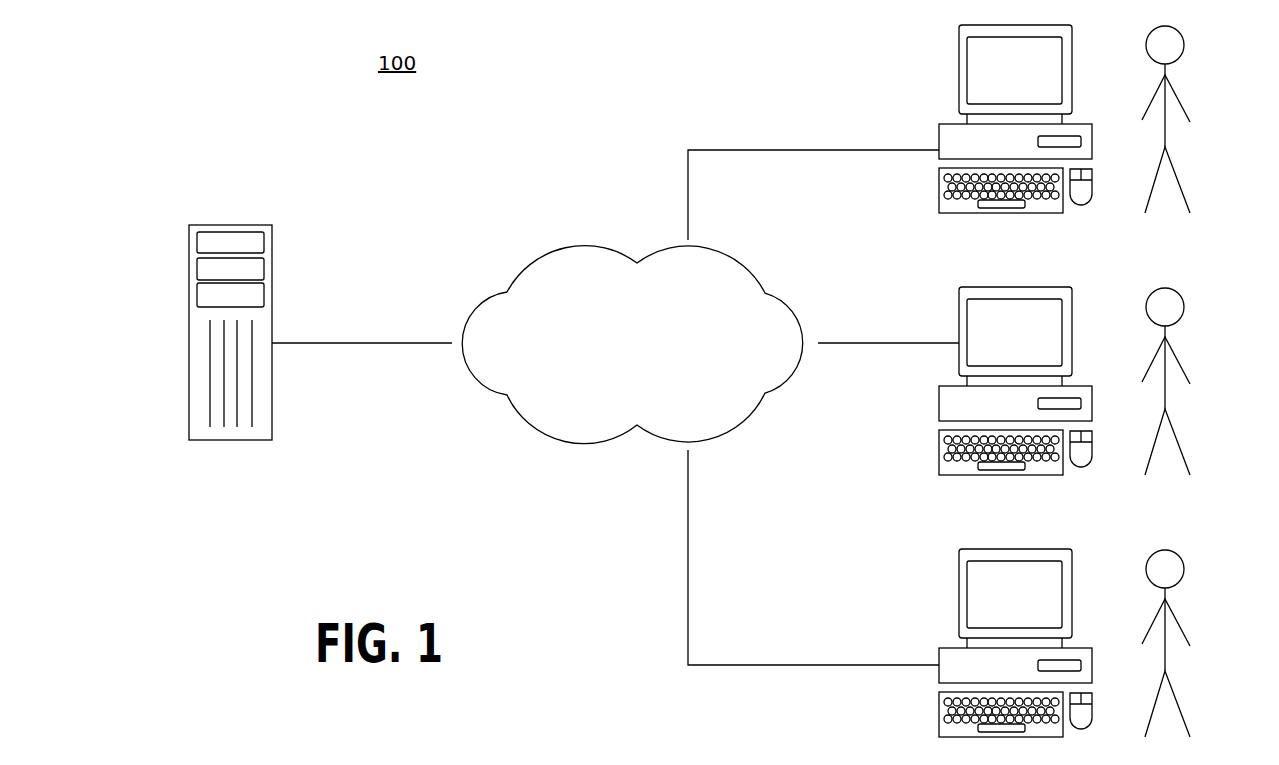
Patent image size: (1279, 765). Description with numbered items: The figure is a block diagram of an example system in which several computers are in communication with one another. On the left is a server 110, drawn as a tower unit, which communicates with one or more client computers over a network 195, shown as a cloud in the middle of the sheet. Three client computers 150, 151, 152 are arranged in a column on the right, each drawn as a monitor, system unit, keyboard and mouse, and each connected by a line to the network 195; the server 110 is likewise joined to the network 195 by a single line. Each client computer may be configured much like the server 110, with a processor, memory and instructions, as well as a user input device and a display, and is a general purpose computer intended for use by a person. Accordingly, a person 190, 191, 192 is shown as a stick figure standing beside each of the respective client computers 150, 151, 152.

The server 110 is at (189, 320).
The network 195 is at (583, 240).
The client computer 150 is at (959, 87).
The client computer 151 is at (959, 335).
The client computer 152 is at (959, 597).
The person 190 is at (1167, 121).
The person 191 is at (1202, 381).
The person 192 is at (1202, 643).